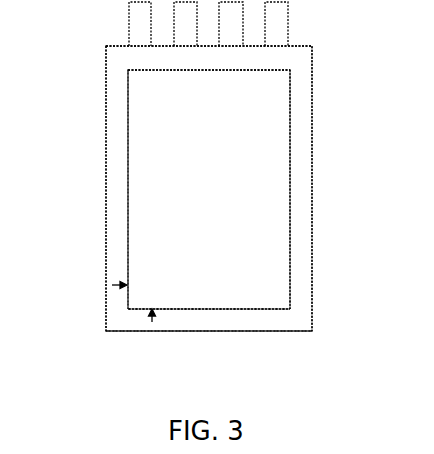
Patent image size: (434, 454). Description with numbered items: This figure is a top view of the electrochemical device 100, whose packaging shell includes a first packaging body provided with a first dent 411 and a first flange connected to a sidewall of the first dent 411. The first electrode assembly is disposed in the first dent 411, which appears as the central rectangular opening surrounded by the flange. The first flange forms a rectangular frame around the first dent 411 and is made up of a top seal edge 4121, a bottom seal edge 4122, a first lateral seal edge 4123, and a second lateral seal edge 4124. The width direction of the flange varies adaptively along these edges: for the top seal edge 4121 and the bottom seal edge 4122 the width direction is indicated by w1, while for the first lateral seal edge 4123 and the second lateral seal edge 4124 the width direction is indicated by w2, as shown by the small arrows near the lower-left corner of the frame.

The electrochemical device 100 is at (96, 19).
The first dent 411 is at (277, 143).
The top seal edge 4121 is at (208, 60).
The bottom seal edge 4122 is at (207, 331).
The first lateral seal edge 4123 is at (303, 184).
The second lateral seal edge 4124 is at (118, 190).